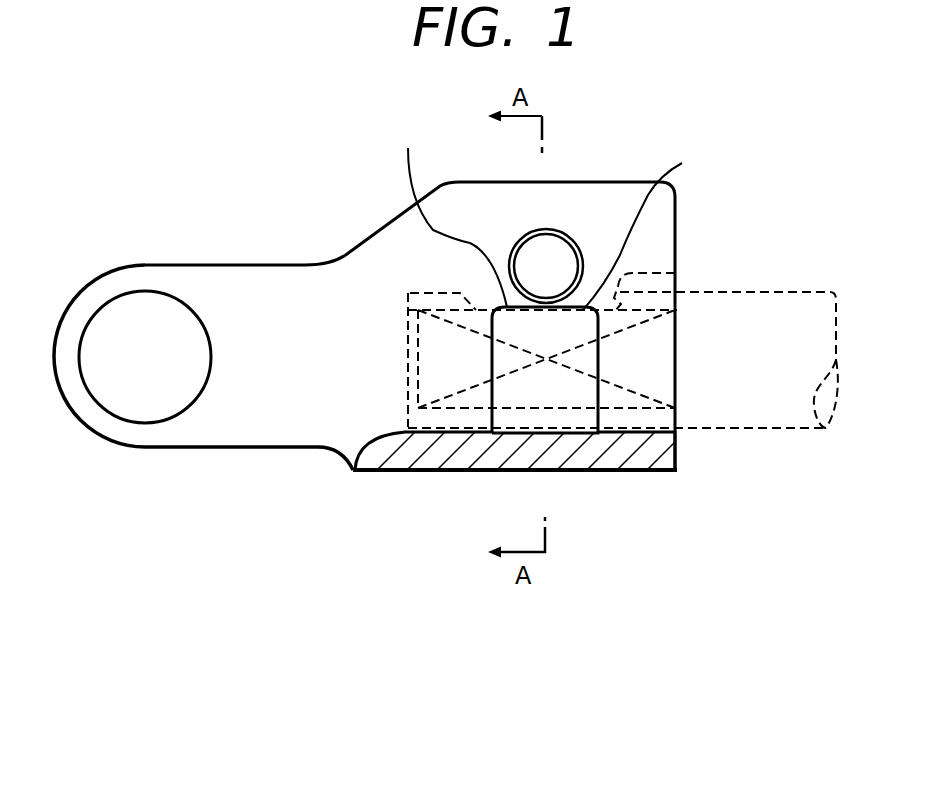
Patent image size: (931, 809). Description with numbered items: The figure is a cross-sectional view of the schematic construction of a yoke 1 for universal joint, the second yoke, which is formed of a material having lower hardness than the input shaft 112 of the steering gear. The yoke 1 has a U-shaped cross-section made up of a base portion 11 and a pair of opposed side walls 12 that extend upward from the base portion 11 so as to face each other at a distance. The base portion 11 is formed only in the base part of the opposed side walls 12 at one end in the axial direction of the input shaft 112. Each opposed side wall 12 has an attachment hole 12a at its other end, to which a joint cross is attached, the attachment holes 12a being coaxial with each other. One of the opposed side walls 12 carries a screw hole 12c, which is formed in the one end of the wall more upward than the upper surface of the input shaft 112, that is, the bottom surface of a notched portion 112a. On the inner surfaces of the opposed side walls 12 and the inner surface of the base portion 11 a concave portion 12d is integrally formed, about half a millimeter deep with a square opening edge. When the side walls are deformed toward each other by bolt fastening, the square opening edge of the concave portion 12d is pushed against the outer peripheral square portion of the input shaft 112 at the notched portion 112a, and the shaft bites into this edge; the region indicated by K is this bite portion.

The yoke for universal joint 1 is at (113, 171).
The base portion 11 is at (428, 463).
The opposed side walls 12 is at (385, 243).
The attachment hole 12a is at (186, 309).
The screw hole 12c is at (572, 262).
The concave portion 12d is at (555, 388).
The bite portion K is at (548, 216).
The input shaft 112 is at (765, 300).
The notched portion 112a is at (678, 273).